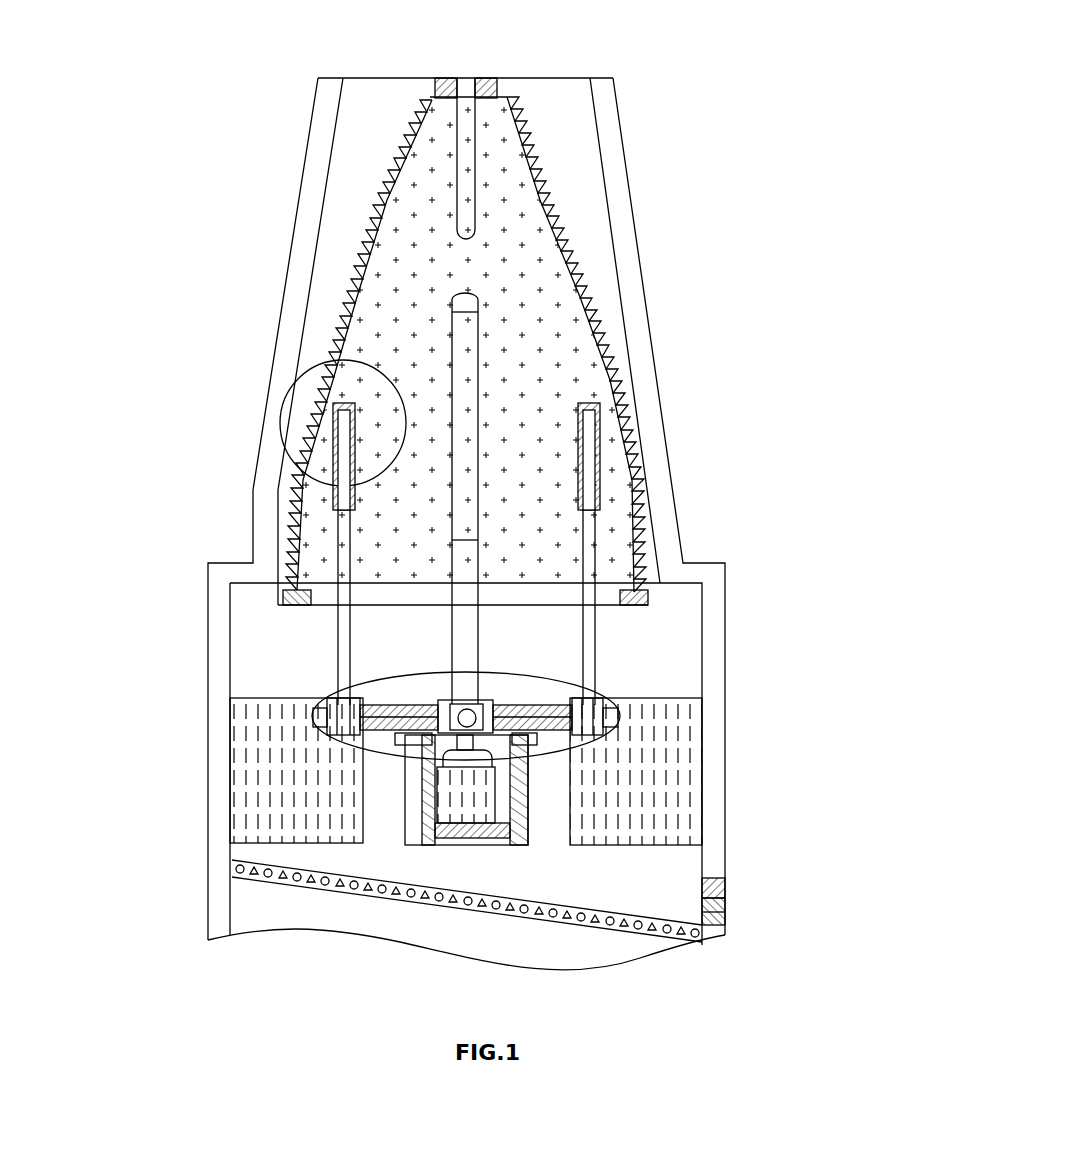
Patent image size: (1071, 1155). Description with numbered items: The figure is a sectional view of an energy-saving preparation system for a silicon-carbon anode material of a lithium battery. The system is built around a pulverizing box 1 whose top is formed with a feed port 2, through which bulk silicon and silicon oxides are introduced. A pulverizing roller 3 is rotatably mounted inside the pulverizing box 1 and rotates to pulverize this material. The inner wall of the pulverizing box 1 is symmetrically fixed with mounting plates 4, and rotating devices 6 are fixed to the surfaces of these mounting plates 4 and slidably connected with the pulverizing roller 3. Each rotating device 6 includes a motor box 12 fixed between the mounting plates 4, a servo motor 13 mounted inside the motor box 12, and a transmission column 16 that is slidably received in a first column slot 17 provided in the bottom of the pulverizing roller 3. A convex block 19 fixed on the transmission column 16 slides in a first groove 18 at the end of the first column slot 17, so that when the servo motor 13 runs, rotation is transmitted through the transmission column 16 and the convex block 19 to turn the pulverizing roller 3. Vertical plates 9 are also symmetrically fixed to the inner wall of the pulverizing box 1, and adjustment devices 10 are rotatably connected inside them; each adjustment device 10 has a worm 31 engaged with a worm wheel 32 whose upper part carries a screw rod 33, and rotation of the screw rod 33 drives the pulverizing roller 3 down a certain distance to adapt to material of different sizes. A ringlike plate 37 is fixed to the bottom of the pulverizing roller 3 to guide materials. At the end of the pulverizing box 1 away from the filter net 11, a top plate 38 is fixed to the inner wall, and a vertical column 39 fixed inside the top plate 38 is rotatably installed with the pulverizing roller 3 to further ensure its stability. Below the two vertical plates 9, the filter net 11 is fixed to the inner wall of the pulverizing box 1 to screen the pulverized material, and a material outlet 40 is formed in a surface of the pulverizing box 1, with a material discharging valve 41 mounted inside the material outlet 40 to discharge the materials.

The pulverizing box 1 is at (500, 524).
The feed port 2 is at (428, 43).
The pulverizing roller 3 is at (423, 351).
The mounting plate 4 is at (589, 878).
The rotating device 6 is at (262, 833).
The vertical plate 9 is at (229, 770).
The adjustment device 10 is at (265, 423).
The filter net 11 is at (467, 940).
The motor box 12 is at (384, 878).
The servo motor 13 is at (657, 765).
The transmission column 16 is at (299, 495).
The first column slot 17 is at (633, 499).
The first groove 18 is at (313, 306).
The convex block 19 is at (546, 340).
The worm 31 is at (224, 677).
The worm wheel 32 is at (727, 685).
The screw rod 33 is at (226, 554).
The ringlike plate 37 is at (718, 545).
The top plate 38 is at (543, 59).
The vertical column 39 is at (599, 158).
The material outlet 40 is at (781, 952).
The material discharging valve 41 is at (794, 844).